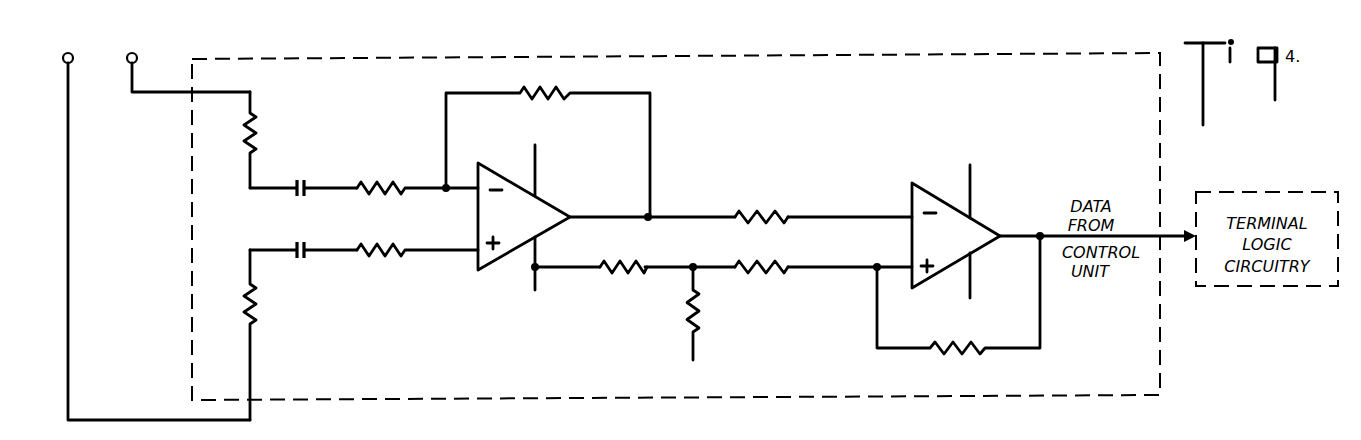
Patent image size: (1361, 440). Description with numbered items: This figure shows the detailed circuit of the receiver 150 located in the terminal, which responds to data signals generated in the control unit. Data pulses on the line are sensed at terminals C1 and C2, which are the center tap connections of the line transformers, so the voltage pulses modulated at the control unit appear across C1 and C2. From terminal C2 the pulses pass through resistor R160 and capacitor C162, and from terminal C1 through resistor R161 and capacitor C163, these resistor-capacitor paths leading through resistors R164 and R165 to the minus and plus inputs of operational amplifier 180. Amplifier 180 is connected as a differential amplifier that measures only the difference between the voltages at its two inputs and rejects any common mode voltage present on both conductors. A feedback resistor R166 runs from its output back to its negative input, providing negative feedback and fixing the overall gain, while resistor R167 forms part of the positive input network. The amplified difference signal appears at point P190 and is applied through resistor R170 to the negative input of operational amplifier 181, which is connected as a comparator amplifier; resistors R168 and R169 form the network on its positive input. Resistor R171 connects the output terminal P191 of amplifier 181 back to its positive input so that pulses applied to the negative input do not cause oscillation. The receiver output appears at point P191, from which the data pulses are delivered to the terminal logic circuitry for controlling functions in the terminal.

The terminal C1 is at (152, 225).
The terminal C2 is at (184, 61).
The resistor R160 is at (247, 140).
The resistor R161 is at (247, 335).
The capacitor C162 is at (303, 188).
The capacitor C163 is at (303, 253).
The resistor R164 is at (417, 189).
The resistor R165 is at (417, 254).
The feedback resistor R166 is at (546, 142).
The resistor R167 is at (625, 271).
The resistor R168 is at (718, 311).
The resistor R169 is at (761, 271).
The resistor R170 is at (761, 216).
The resistor R171 is at (956, 307).
The operational amplifier 180 is at (494, 268).
The operational amplifier 181 is at (923, 288).
The point P190 is at (660, 211).
The output terminal P191 is at (1013, 228).
The receiver 150 is at (1160, 397).